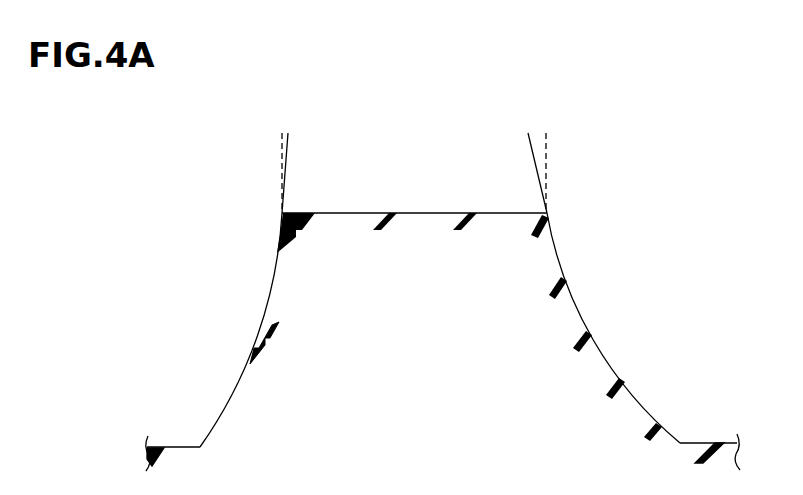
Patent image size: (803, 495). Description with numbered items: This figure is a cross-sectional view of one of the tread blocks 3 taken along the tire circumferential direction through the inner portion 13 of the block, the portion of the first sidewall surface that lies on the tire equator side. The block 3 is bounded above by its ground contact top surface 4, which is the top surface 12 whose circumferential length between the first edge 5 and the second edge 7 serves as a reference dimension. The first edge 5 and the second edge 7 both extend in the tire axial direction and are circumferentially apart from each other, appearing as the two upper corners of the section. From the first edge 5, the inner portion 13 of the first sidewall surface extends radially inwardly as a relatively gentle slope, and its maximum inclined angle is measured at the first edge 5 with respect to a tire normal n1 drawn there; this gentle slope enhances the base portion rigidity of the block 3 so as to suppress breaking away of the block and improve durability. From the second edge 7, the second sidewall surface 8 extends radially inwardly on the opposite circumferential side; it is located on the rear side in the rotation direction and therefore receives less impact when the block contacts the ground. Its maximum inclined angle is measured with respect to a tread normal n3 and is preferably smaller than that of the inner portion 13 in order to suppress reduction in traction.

The block 3 is at (432, 368).
The ground contact top surface 4 is at (414, 167).
The top surface 12 is at (370, 212).
The first edge 5 is at (547, 213).
The second edge 7 is at (282, 212).
The second sidewall surface 8 is at (268, 300).
The inner portion 13 is at (577, 307).
The tire normal n1 is at (547, 166).
The tread normal n3 is at (280, 167).